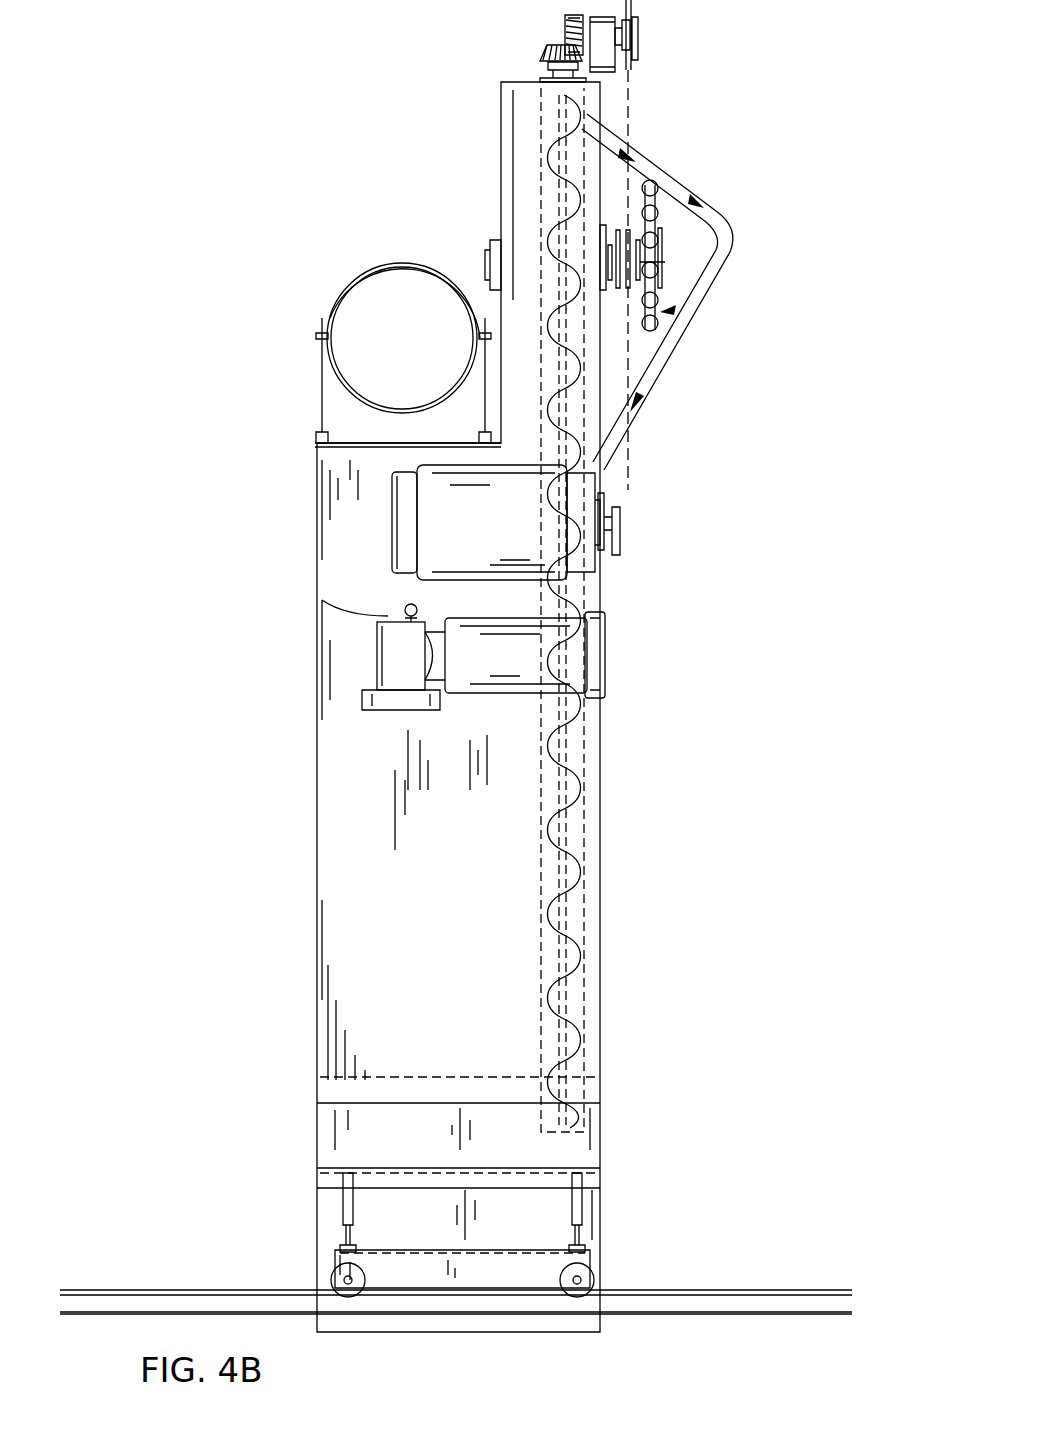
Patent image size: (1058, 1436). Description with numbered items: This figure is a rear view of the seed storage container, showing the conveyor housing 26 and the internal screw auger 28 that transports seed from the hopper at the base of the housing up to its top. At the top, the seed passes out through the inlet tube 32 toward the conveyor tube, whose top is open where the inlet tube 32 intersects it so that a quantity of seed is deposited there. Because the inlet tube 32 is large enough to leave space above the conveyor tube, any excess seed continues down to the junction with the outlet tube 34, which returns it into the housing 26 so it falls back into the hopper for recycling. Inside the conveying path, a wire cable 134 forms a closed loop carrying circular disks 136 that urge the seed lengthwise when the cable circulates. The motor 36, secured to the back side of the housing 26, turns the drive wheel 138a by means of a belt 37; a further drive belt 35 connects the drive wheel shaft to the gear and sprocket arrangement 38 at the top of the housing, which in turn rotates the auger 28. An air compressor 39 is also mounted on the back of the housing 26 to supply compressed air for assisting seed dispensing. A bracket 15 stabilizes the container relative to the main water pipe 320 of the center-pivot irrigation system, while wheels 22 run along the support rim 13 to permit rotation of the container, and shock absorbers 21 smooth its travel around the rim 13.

The support rim 13 is at (763, 1303).
The bracket 15 is at (322, 380).
The shock absorbers 21 is at (348, 1200).
The wheels 22 is at (348, 1278).
The conveyor housing 26 is at (373, 885).
The screw auger 28 is at (585, 885).
The inlet tube 32 is at (690, 208).
The outlet tube 34 is at (683, 340).
The drive belt 35 is at (628, 112).
The motor 36 is at (378, 523).
The belt 37 is at (625, 475).
The gear and sprocket arrangement 38 is at (548, 17).
The air compressor 39 is at (615, 648).
The wire cable 134 is at (662, 262).
The circular disks 136 is at (650, 183).
The drive wheel 138a is at (676, 309).
The main water pipe 320 is at (355, 405).